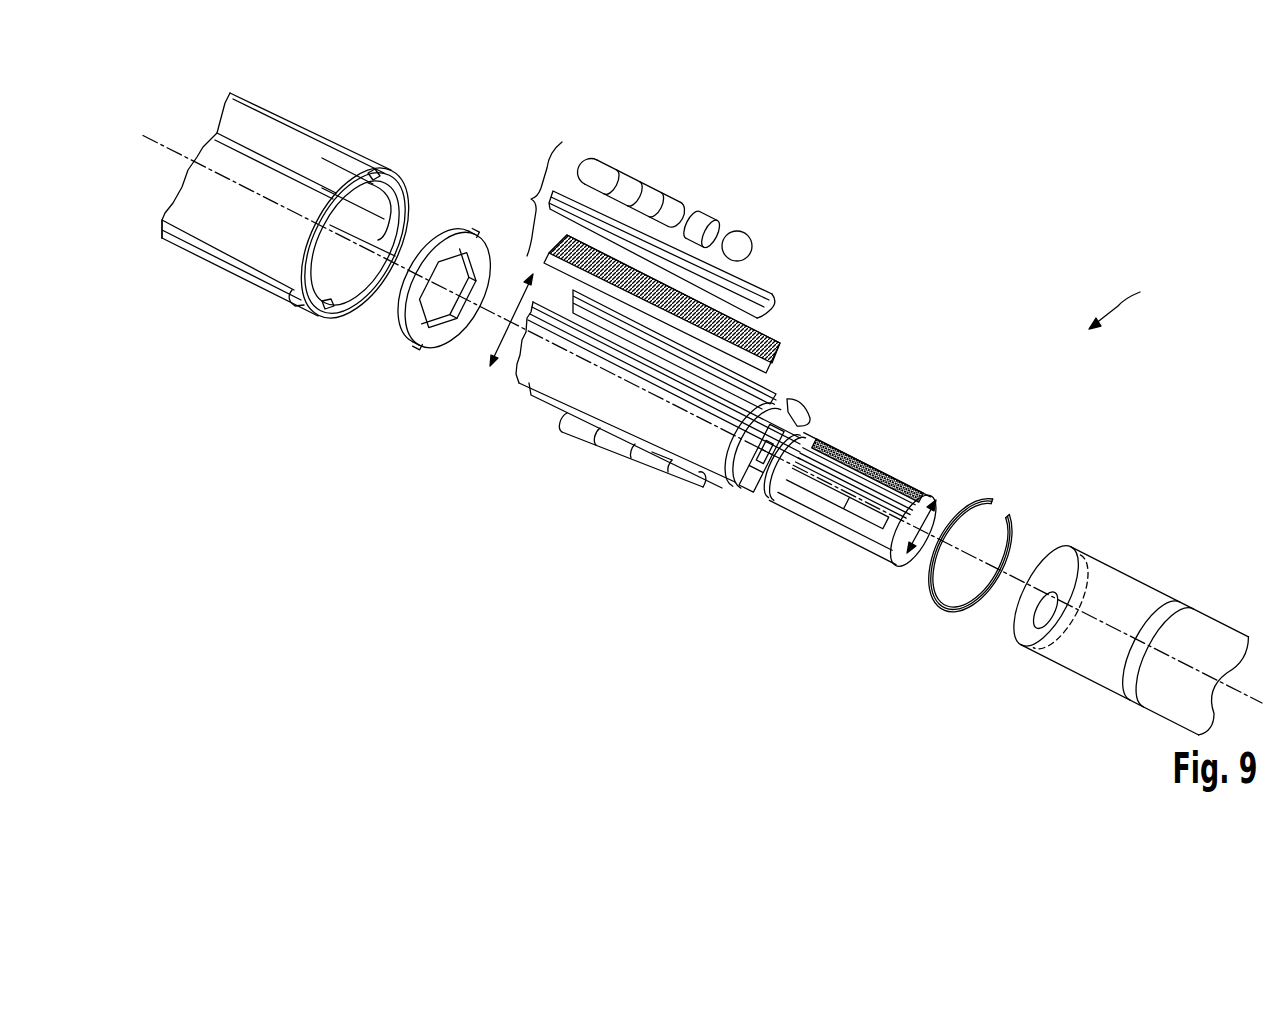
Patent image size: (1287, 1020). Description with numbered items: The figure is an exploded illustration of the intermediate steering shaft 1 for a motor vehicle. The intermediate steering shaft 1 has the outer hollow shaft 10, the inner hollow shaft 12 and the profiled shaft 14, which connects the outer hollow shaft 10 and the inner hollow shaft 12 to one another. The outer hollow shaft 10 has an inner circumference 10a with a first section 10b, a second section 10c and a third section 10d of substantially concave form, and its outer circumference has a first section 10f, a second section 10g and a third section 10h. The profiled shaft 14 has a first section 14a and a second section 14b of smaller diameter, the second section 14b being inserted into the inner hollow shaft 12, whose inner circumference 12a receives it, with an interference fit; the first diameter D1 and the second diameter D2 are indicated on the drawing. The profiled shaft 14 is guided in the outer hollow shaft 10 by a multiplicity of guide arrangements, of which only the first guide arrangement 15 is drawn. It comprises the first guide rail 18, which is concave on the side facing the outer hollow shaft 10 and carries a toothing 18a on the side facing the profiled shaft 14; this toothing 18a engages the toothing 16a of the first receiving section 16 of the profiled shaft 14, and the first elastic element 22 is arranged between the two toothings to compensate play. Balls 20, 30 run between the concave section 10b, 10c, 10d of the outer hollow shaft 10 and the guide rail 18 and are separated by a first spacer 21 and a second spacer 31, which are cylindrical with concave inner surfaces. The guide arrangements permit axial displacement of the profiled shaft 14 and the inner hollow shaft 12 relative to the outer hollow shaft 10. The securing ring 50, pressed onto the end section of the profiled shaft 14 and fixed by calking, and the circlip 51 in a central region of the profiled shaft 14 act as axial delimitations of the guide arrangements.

The intermediate steering shaft 1 is at (1120, 303).
The outer hollow shaft 10 is at (227, 231).
The inner circumference 10a is at (343, 288).
The first section 10b is at (375, 170).
The second section 10c is at (382, 237).
The third section 10d is at (327, 307).
The first section 10f is at (298, 150).
The second section 10g is at (401, 240).
The third section 10h is at (288, 293).
The inner hollow shaft 12 is at (1117, 580).
The inner circumference 12a is at (1058, 567).
The profiled shaft 14 is at (552, 404).
The first section 14a is at (533, 367).
The second section 14b is at (862, 543).
The first guide arrangement 15 is at (598, 199).
The first receiving section 16 is at (757, 390).
The toothing 16a is at (790, 403).
The first guide rail 18 is at (753, 298).
The toothing 18a is at (776, 316).
The balls 20 is at (742, 233).
The first spacer 21 is at (703, 220).
The first elastic element 22 is at (777, 351).
The balls 30 is at (687, 483).
The second spacer 31 is at (655, 471).
The securing ring 50 is at (417, 337).
The circlip 51 is at (988, 500).
The first diameter D1 is at (492, 360).
The second diameter D2 is at (938, 510).